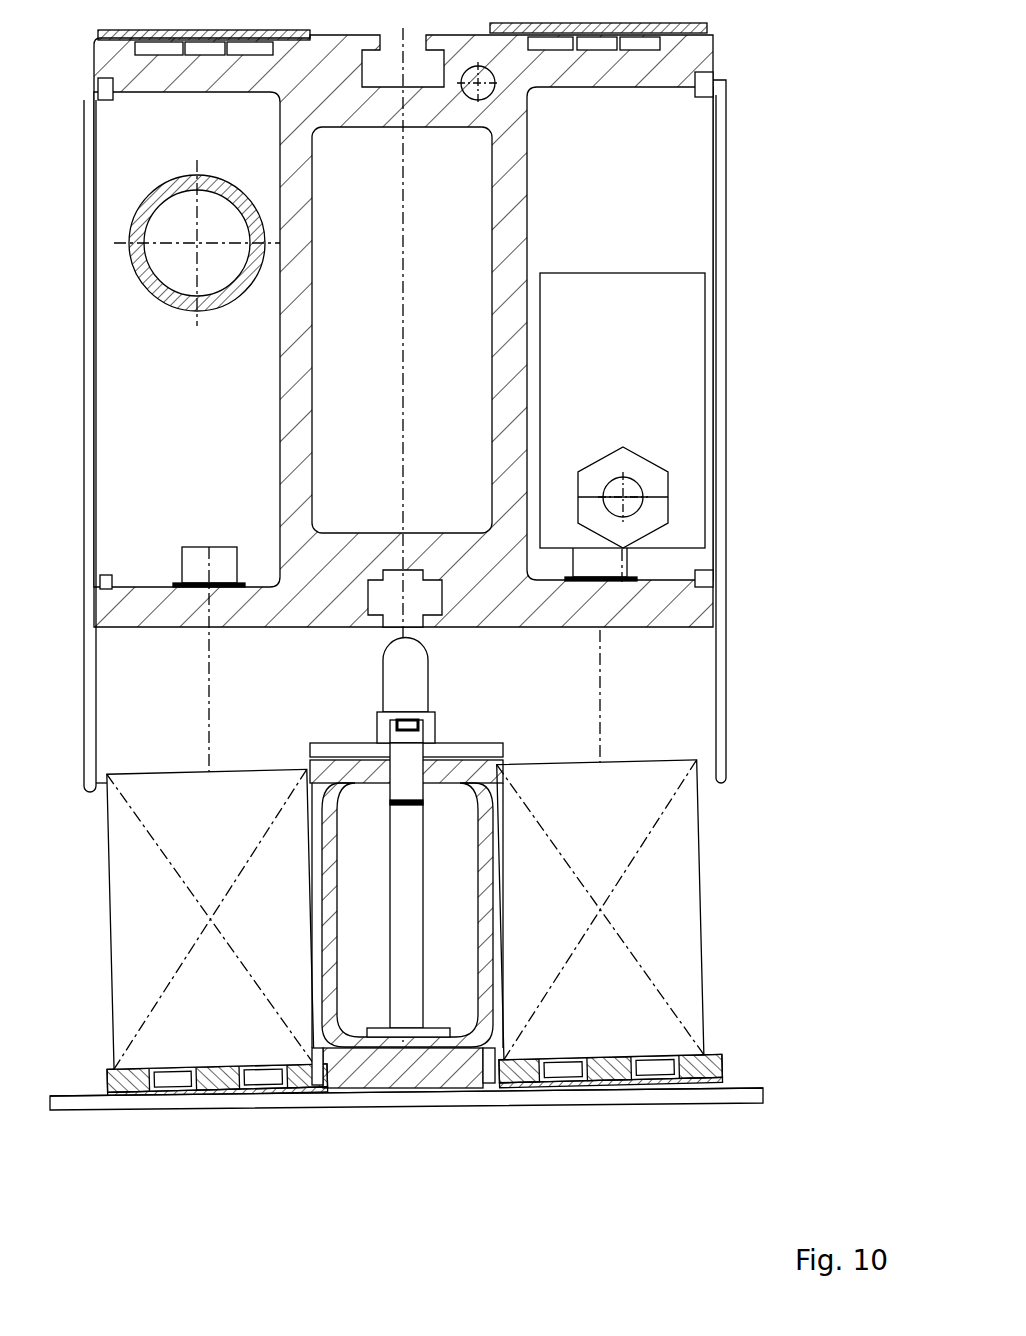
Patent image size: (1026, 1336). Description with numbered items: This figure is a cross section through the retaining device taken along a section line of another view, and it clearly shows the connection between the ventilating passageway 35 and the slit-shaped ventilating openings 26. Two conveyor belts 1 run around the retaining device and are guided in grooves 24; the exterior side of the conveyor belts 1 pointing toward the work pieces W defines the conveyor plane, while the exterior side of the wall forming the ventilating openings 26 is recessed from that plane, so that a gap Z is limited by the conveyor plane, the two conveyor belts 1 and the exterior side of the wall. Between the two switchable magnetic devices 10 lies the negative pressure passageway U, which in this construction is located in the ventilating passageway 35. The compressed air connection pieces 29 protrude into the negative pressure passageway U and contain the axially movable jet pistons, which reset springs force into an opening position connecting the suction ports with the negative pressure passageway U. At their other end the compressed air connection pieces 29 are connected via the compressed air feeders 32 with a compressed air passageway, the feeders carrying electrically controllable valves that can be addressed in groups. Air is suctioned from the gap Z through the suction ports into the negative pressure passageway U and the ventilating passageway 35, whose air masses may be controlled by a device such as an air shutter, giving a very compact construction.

The conveyor belt 1 is at (130, 1098).
The switchable magnetic device 10 is at (663, 948).
The groove 24 is at (680, 422).
The ventilating opening 26 is at (323, 1087).
The compressed air connection piece 29 is at (413, 928).
The compressed air feeder 32 is at (398, 700).
The ventilating passageway 35 is at (288, 1095).
The gap Z is at (442, 1095).
The negative pressure passageway U is at (478, 1090).
The work pieces W is at (592, 1100).